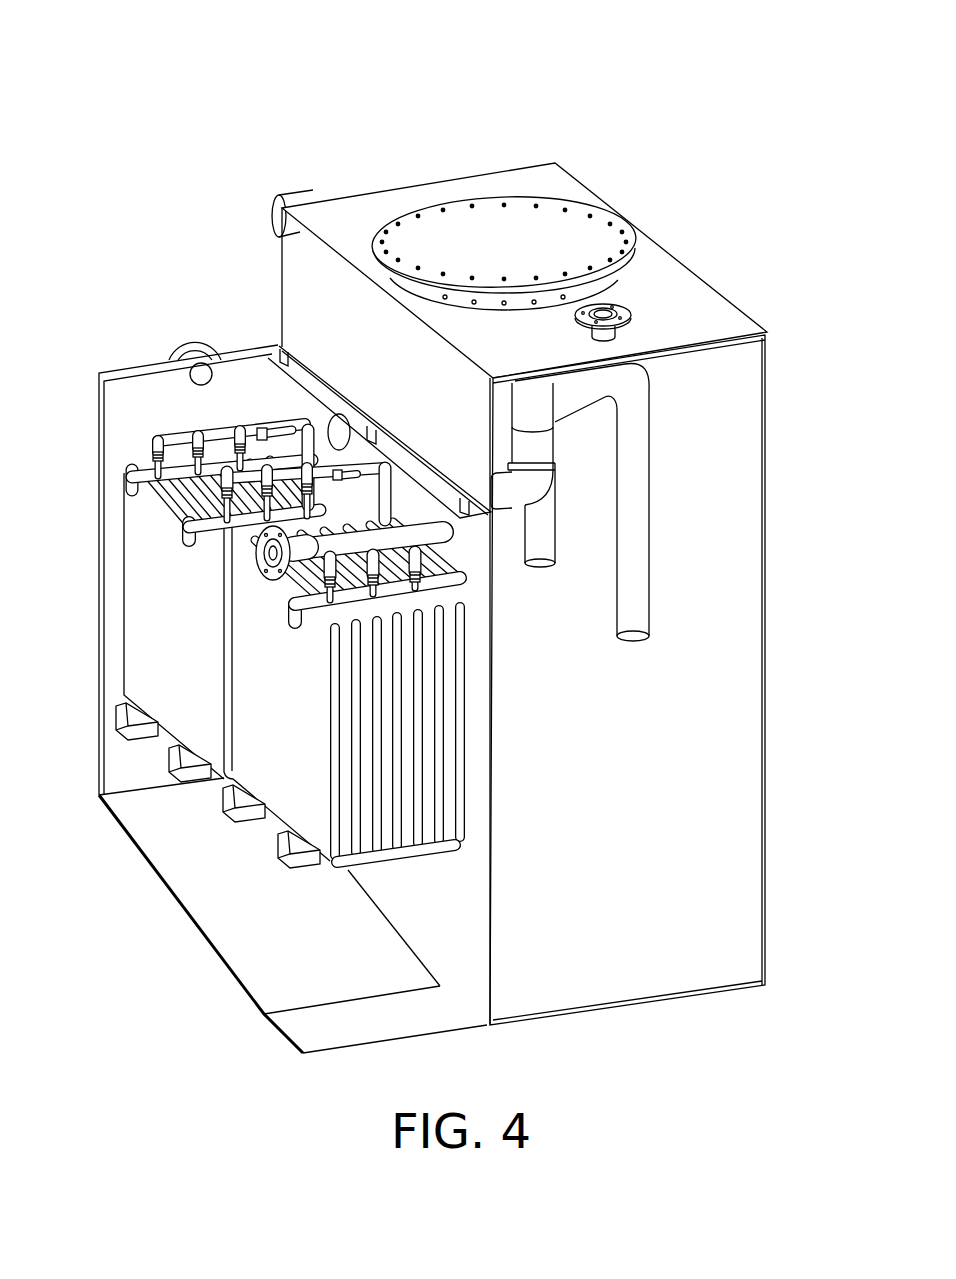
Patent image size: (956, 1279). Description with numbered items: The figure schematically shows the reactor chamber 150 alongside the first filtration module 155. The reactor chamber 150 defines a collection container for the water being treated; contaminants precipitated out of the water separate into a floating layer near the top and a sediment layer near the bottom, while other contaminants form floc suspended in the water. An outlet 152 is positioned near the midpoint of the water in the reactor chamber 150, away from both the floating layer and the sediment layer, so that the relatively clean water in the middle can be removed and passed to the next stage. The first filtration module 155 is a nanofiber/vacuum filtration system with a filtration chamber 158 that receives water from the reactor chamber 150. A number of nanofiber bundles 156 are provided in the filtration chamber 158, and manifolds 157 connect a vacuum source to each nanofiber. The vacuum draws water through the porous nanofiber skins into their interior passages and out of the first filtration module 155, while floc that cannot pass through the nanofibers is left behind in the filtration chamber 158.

The reactor chamber 150 is at (540, 162).
The outlet 152 is at (647, 627).
The first filtration module 155 is at (295, 943).
The nanofiber bundles 156 is at (150, 641).
The manifolds 157 is at (194, 424).
The filtration chamber 158 is at (355, 918).